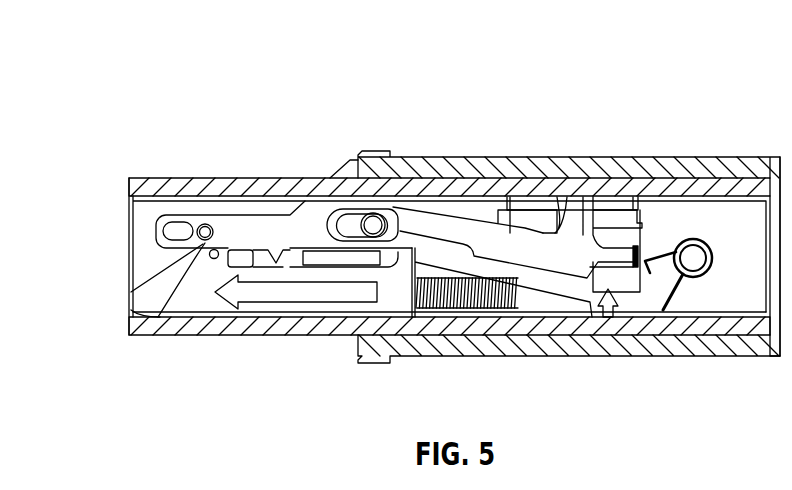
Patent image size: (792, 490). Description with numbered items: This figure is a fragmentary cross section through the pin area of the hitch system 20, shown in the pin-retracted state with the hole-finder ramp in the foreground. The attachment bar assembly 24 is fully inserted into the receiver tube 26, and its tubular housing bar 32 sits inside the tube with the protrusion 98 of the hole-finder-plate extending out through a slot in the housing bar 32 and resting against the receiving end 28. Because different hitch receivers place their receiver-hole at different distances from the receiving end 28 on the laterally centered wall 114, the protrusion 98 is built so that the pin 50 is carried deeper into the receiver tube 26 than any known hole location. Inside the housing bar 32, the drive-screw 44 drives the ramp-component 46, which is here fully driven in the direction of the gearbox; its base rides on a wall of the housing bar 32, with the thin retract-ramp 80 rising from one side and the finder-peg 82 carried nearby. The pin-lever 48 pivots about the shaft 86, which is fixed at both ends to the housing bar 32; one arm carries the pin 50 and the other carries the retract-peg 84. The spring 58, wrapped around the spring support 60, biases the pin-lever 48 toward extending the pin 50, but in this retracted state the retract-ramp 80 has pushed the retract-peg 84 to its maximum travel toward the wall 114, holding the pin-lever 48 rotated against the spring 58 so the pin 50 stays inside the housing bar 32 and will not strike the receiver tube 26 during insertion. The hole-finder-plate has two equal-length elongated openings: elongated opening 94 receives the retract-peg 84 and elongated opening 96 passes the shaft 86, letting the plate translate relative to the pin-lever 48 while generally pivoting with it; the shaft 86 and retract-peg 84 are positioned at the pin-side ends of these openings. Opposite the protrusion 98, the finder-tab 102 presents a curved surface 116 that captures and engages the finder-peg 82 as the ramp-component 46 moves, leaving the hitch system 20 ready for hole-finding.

The hitch system 20 is at (369, 110).
The attachment bar assembly 24 is at (268, 179).
The receiver tube 26 is at (660, 170).
The receiving end 28 is at (356, 150).
The housing bar 32 is at (228, 335).
The drive-screw 44 is at (484, 296).
The ramp-component 46 is at (402, 280).
The pin-lever 48 is at (497, 259).
The pin 50 is at (580, 208).
The spring 58 is at (672, 302).
The spring support 60 is at (693, 238).
The retract-ramp 80 is at (160, 268).
The finder-peg 82 is at (213, 259).
The retract-peg 84 is at (158, 317).
The shaft 86 is at (375, 213).
The elongated opening 94 is at (332, 221).
The elongated opening 96 is at (182, 220).
The protrusion 98 is at (344, 168).
The finder-tab 102 is at (268, 268).
The wall 114 is at (502, 168).
The curved surface 116 is at (205, 224).